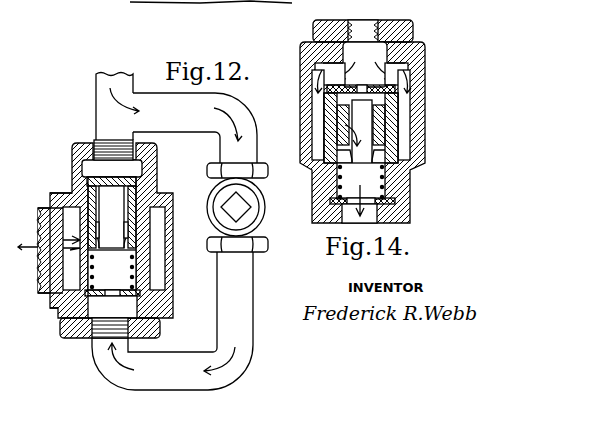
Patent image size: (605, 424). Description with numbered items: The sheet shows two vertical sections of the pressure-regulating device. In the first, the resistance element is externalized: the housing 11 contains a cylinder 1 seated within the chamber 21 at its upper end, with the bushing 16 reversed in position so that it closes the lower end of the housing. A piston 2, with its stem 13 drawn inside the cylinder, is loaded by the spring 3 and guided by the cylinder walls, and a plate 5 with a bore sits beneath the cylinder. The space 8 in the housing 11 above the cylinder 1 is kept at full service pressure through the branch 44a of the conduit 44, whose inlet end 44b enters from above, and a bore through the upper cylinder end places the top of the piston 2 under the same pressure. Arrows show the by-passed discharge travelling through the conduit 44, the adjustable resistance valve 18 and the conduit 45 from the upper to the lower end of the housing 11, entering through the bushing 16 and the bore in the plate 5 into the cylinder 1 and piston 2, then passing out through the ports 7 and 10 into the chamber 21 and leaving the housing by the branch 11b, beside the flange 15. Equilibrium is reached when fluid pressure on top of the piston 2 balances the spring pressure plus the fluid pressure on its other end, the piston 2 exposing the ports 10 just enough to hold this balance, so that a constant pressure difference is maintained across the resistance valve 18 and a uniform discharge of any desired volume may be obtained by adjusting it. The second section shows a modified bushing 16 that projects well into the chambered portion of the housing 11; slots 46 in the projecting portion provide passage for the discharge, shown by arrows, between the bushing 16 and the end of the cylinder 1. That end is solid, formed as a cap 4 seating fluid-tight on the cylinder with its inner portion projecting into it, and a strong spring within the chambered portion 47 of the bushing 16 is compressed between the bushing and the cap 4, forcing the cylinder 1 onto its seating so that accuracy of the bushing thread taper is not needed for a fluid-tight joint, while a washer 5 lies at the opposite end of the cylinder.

In FIG. 12, the cylinder 1 is at (148, 281).
In FIG. 14, the cylinder 1 is at (390, 118).
In FIG. 12, the piston 2 is at (112, 217).
In FIG. 12, the spring 3 is at (94, 277).
In FIG. 14, the cap 4 is at (365, 86).
In FIG. 12, the plate 5 is at (90, 292).
In FIG. 14, the plate 5 is at (386, 201).
In FIG. 12, the ports 7 is at (101, 240).
In FIG. 12, the inlet chamber 8 is at (80, 178).
In FIG. 12, the ports 10 is at (78, 240).
In FIG. 12, the housing 11 is at (150, 166).
In FIG. 14, the housing 11 is at (420, 52).
In FIG. 12, the branch 11b is at (45, 262).
In FIG. 12, the piston stem 13 is at (111, 213).
In FIG. 12, the flange 15 is at (52, 196).
In FIG. 12, the bushing 16 is at (66, 326).
In FIG. 14, the bushing 16 is at (400, 30).
In FIG. 12, the adjustable resistance valve 18 is at (237, 207).
In FIG. 12, the chamber 21 is at (155, 270).
In FIG. 12, the conduit 44 is at (183, 125).
In FIG. 12, the branch 44a is at (106, 143).
In FIG. 12, the inlet pipe end 44b is at (101, 79).
In FIG. 12, the conduit 45 is at (172, 321).
In FIG. 14, the slots 46 is at (396, 76).
In FIG. 14, the chambered portion 47 is at (343, 48).